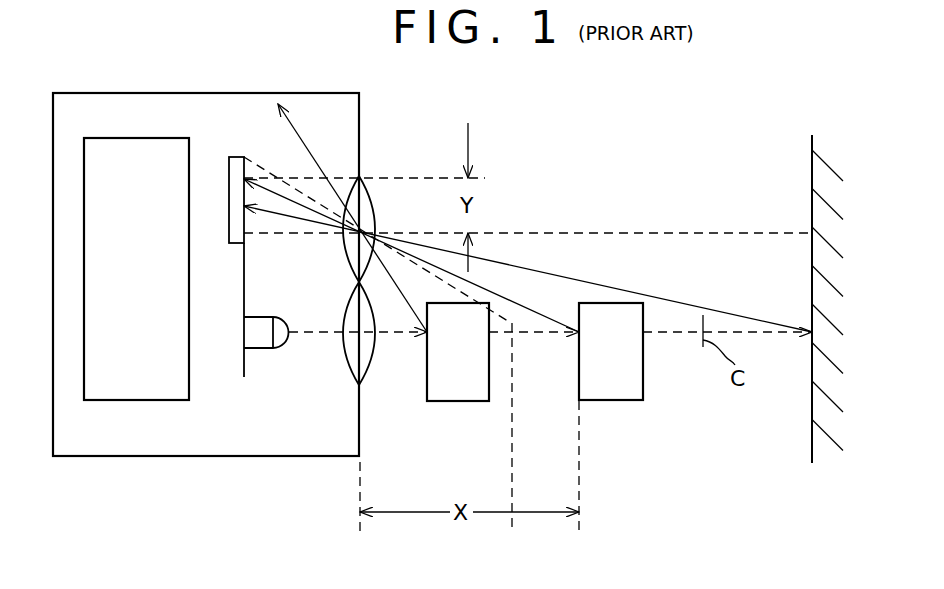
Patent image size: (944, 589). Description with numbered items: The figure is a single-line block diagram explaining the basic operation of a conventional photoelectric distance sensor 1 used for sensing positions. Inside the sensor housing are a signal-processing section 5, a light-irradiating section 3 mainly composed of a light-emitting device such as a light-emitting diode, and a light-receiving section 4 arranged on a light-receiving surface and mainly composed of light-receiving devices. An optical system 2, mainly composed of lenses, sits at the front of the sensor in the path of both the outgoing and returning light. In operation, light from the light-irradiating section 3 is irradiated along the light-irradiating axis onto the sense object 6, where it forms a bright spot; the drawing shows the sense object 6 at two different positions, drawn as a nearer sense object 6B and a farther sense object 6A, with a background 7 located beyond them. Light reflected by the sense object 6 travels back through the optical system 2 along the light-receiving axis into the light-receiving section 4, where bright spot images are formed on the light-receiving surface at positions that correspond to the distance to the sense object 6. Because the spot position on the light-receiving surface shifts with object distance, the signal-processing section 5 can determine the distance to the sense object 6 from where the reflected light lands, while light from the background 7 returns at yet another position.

The photoelectric distance sensor 1 is at (359, 137).
The optical system 2 is at (368, 368).
The light-irradiating section 3 is at (279, 350).
The light-receiving section 4 is at (236, 157).
The signal-processing section 5 is at (123, 138).
The sense object 6 is at (568, 405).
The sense object 6A is at (622, 400).
The sense object 6B is at (483, 402).
The background 7 is at (812, 180).